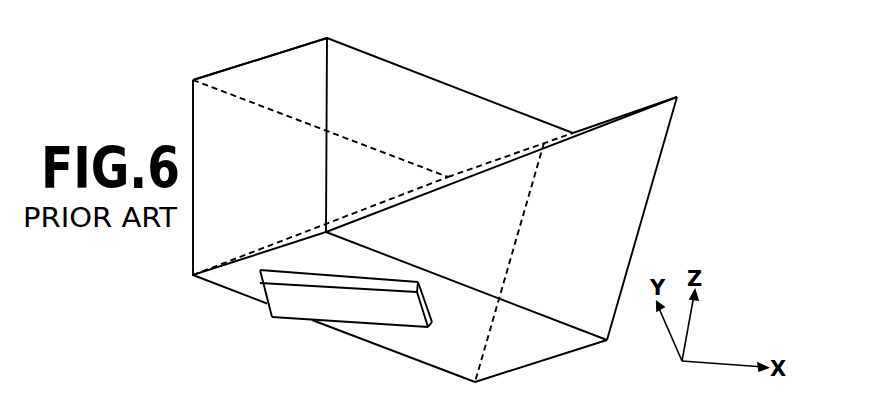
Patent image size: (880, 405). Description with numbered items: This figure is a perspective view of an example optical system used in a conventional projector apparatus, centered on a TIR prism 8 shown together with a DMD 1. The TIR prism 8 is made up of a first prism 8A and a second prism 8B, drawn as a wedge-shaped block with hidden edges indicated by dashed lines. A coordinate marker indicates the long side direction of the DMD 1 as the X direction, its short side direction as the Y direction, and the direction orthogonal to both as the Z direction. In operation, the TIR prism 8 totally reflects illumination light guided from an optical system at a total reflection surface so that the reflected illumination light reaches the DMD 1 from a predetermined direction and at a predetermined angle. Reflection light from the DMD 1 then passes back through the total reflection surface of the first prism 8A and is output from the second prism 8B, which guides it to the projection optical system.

The TIR prism 8 is at (446, 196).
The first prism 8A is at (627, 225).
The second prism 8B is at (258, 59).
The DMD 1 is at (308, 302).